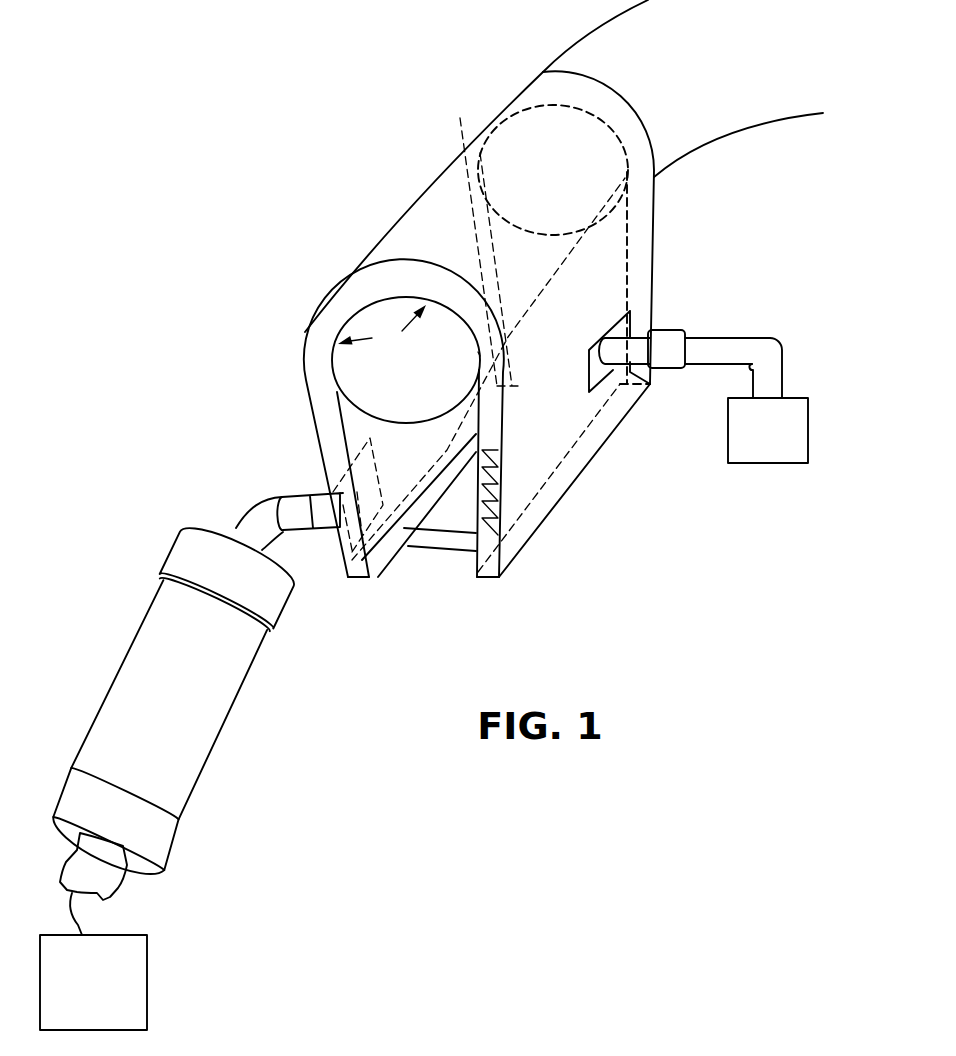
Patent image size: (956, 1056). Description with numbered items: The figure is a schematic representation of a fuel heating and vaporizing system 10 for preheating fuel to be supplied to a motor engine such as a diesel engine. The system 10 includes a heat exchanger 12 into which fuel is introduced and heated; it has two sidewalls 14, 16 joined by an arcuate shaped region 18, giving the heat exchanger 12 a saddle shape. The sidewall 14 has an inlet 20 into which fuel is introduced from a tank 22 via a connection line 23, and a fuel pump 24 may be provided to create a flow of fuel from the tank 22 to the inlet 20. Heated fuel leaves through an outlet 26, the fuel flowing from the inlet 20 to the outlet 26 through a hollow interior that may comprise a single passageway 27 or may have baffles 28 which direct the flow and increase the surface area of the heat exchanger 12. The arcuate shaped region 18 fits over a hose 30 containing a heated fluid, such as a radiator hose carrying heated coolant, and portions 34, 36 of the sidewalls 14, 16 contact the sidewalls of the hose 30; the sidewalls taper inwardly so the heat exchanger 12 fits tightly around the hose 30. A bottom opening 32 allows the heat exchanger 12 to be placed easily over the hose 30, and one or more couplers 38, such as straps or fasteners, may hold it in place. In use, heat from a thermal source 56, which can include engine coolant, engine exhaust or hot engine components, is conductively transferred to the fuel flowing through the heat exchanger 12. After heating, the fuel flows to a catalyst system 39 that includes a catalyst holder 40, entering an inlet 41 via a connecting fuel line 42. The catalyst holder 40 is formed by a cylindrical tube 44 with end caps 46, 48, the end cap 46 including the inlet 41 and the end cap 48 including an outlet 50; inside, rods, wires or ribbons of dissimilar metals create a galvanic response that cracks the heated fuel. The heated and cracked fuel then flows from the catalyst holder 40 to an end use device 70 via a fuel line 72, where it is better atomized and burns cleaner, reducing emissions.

The fuel heating and vaporizing system 10 is at (264, 130).
The heat exchanger 12 is at (432, 163).
The sidewall 14 is at (567, 420).
The sidewall 16 is at (397, 440).
The arcuate shaped region 18 is at (325, 388).
The inlet 20 is at (678, 384).
The tank 22 is at (768, 466).
The connection line 23 is at (735, 350).
The fuel pump 24 is at (782, 335).
The outlet 26 is at (325, 495).
The passageway 27 is at (415, 242).
The baffles 28 is at (513, 516).
The hose 30 is at (620, 50).
The bottom opening 32 is at (419, 558).
The contact portion 34 is at (480, 356).
The contact portion 36 is at (336, 380).
The couplers 38 is at (434, 527).
The catalyst system 39 is at (238, 766).
The catalyst holder 40 is at (138, 656).
The inlet 41 is at (238, 530).
The connecting fuel line 42 is at (287, 532).
The cylindrical tube 44 is at (238, 684).
The end cap 46 is at (200, 557).
The end cap 48 is at (83, 790).
The outlet 50 is at (123, 867).
The thermal source 56 is at (350, 320).
The end use device 70 is at (148, 968).
The fuel line 72 is at (72, 875).